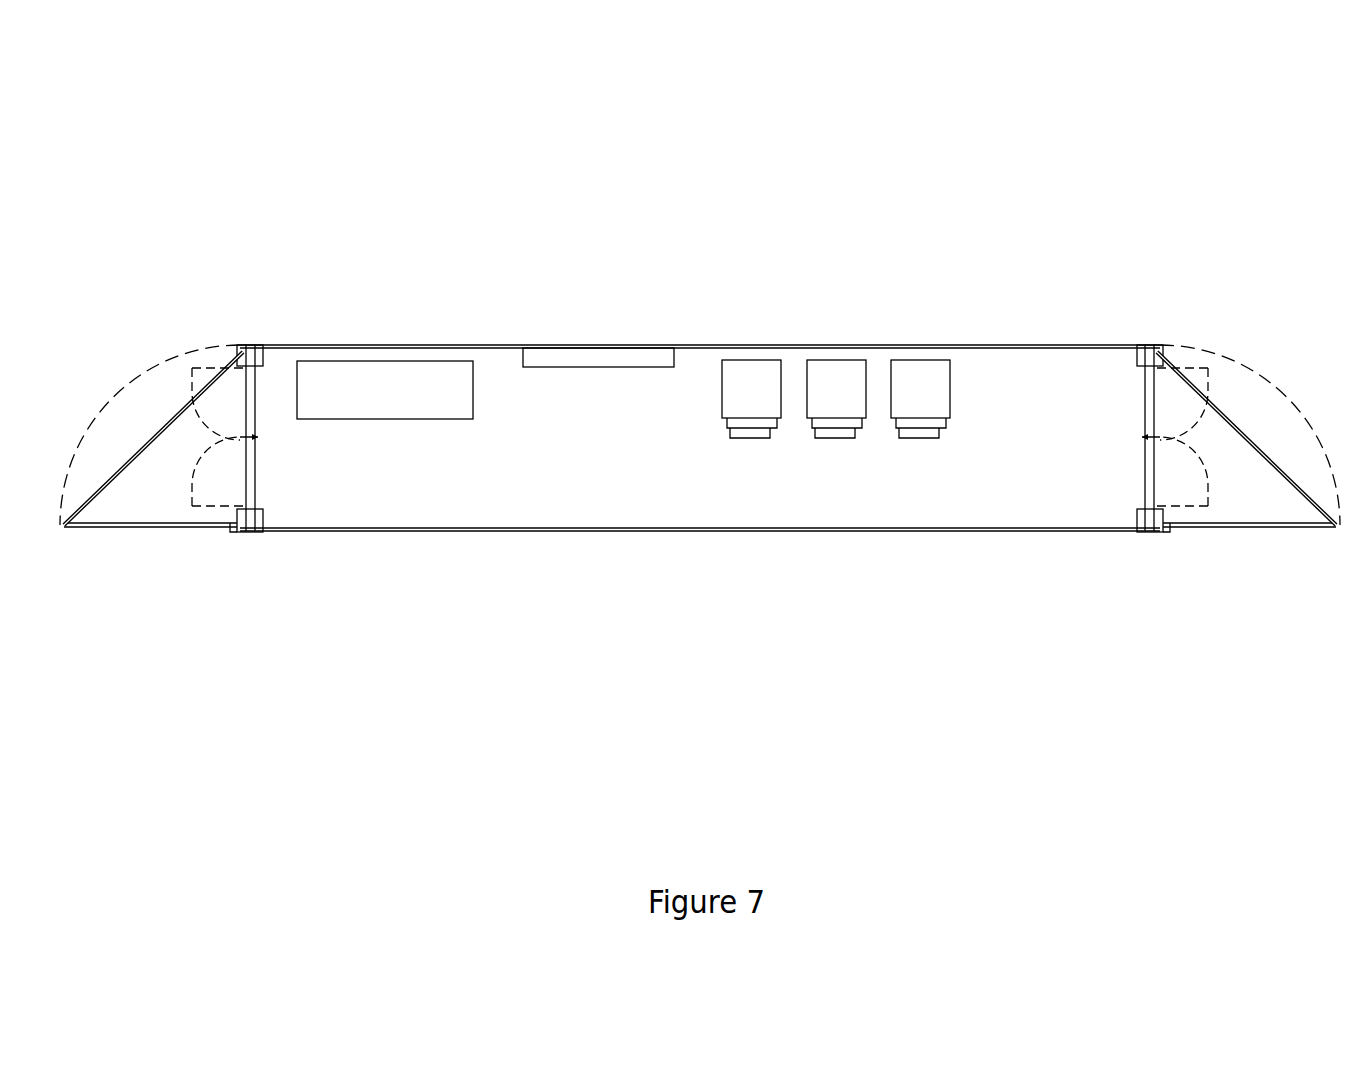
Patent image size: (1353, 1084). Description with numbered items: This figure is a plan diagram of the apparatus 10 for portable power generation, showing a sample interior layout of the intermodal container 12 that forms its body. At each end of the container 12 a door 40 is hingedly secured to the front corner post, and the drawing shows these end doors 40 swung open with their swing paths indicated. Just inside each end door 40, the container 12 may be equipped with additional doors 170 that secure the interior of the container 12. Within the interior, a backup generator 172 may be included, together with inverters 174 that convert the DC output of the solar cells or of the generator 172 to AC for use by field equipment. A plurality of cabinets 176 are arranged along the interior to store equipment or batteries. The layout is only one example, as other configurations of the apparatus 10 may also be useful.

The apparatus for portable power generation 10 is at (1046, 135).
The intermodal container 12 is at (994, 345).
The door 40 is at (137, 527).
The additional door 170 is at (217, 368).
The backup generator 172 is at (385, 361).
The inverter 174 is at (599, 348).
The cabinet 176 is at (752, 360).